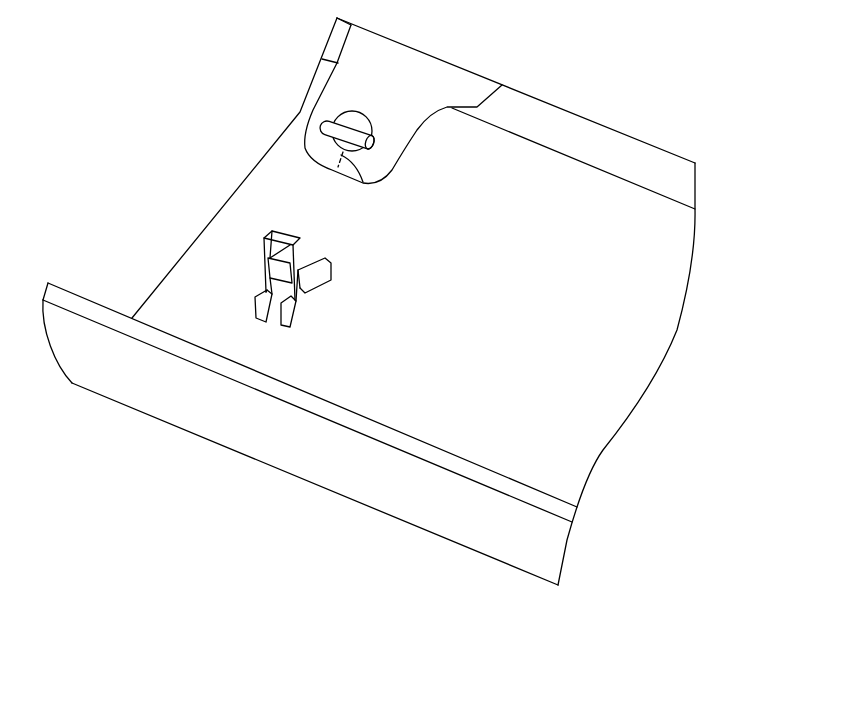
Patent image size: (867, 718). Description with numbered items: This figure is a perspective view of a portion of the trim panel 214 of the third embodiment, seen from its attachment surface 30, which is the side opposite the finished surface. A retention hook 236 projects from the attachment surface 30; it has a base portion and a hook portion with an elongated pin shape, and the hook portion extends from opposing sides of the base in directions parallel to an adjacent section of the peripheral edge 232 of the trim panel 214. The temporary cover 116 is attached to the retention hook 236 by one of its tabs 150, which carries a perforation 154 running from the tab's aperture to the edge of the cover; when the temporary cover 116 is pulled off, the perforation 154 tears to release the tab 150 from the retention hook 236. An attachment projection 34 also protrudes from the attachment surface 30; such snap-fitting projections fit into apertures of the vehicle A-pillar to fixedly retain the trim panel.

The trim panel 214 is at (183, 191).
The attachment surface 30 is at (263, 179).
The temporary cover 116 is at (448, 82).
The peripheral edge 232 is at (597, 120).
The tab 150 is at (310, 157).
The perforation 154 is at (356, 174).
The retention hook 236 is at (328, 128).
The attachment projection 34 is at (305, 260).